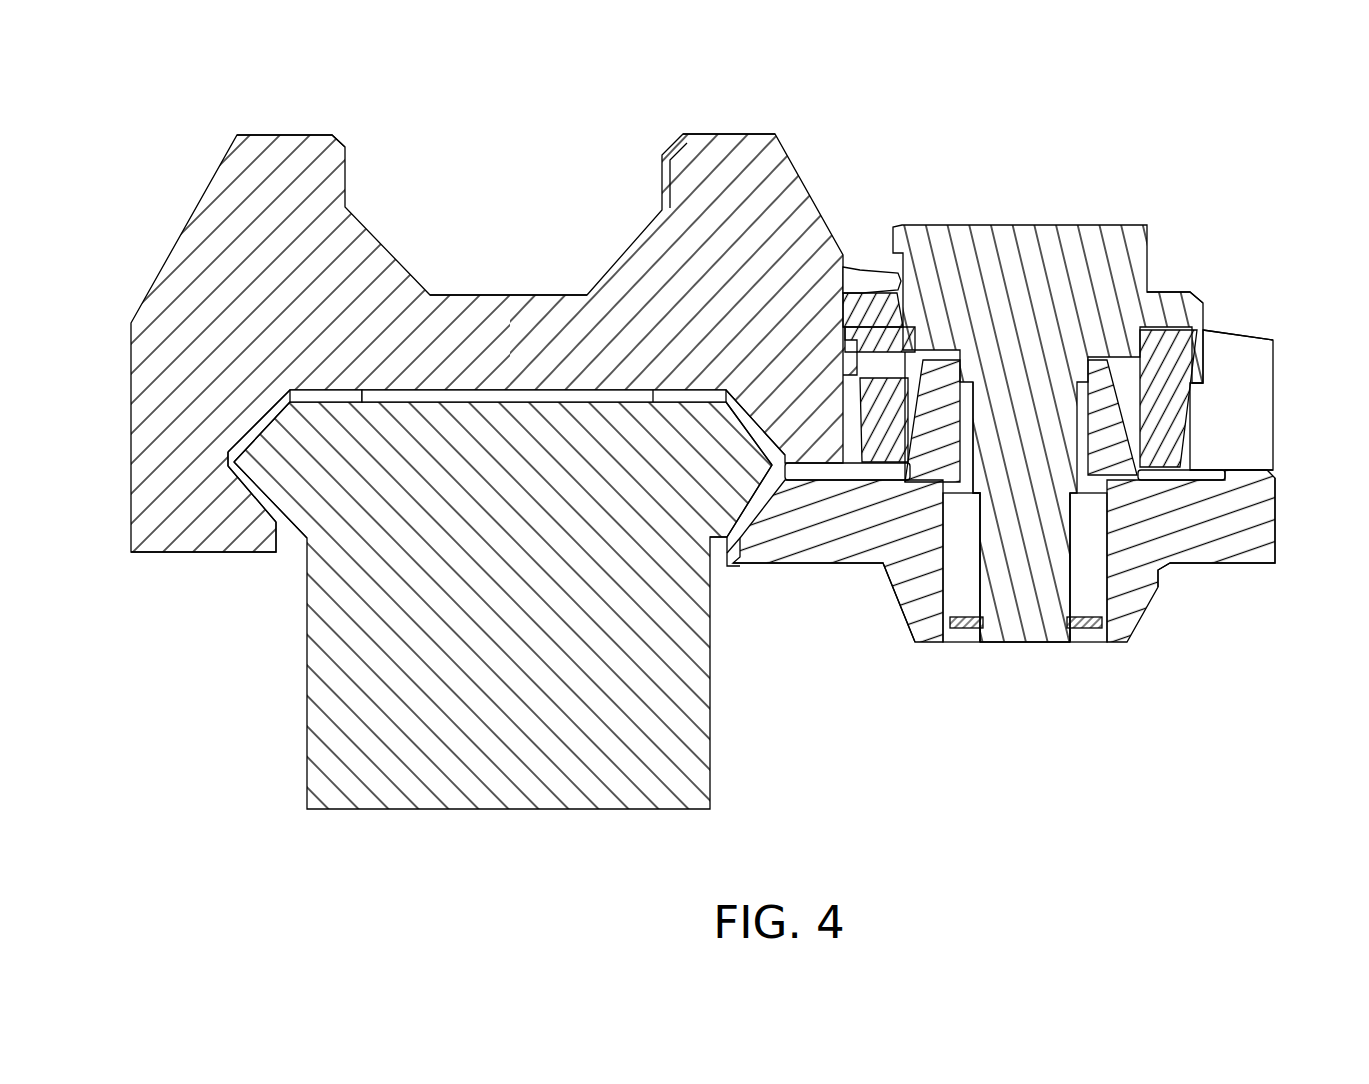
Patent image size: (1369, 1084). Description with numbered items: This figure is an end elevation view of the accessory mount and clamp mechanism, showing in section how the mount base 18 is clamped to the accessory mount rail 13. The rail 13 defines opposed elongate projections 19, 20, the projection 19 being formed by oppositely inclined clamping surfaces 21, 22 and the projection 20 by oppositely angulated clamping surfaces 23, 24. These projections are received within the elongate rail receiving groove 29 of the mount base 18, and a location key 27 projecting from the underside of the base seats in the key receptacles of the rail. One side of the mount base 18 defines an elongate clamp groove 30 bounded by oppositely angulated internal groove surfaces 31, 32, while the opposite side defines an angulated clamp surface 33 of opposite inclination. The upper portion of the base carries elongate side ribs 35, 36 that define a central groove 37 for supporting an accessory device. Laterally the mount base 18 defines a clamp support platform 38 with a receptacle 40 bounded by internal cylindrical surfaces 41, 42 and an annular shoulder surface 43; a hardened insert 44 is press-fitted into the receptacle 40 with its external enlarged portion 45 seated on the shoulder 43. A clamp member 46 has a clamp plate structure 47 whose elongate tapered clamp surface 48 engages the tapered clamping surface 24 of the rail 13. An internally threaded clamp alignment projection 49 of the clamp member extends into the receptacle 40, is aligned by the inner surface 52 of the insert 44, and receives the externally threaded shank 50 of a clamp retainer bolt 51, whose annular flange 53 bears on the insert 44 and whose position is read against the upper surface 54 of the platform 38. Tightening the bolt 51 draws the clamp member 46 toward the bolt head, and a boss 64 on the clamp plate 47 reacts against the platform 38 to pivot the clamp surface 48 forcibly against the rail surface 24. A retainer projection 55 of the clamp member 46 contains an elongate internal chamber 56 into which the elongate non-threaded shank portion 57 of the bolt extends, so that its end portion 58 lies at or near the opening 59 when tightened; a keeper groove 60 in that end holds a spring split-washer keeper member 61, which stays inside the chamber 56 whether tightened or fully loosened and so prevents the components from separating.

The accessory mount rail 13 is at (408, 809).
The mount base 18 is at (182, 205).
The elongate projection 19 is at (232, 466).
The elongate projection 20 is at (750, 473).
The clamping surface 21 is at (262, 458).
The clamping surface 22 is at (224, 514).
The clamping surface 23 is at (745, 400).
The clamping surface 24 is at (735, 540).
The location key 27 is at (420, 395).
The rail receiving groove 29 is at (314, 395).
The clamp groove 30 is at (228, 472).
The internal groove surface 31 is at (276, 416).
The internal groove surface 32 is at (222, 532).
The clamp surface 33 is at (748, 428).
The side rib 35 is at (280, 165).
The side rib 36 is at (735, 165).
The central groove 37 is at (510, 292).
The clamp support platform 38 is at (1250, 415).
The receptacle 40 is at (1124, 370).
The internal cylindrical surface 41 is at (1175, 312).
The internal cylindrical surface 42 is at (1168, 394).
The annular shoulder surface 43 is at (1195, 345).
The hardened insert 44 is at (877, 417).
The external enlarged portion 45 is at (862, 347).
The clamp member 46 is at (1275, 565).
The clamp plate structure 47 is at (1250, 532).
The tapered clamp surface 48 is at (740, 508).
The clamp alignment projection 49 is at (957, 372).
The externally threaded shank 50 is at (905, 475).
The clamp retainer bolt 51 is at (1128, 373).
The inner surface of the insert 52 is at (945, 420).
The annular flange 53 is at (862, 307).
The upper surface 54 is at (1252, 332).
The retainer projection 55 is at (1150, 592).
The internal chamber 56 is at (1110, 626).
The non-threaded shank portion 57 is at (1027, 575).
The end portion 58 is at (1005, 643).
The opening 59 is at (957, 643).
The keeper groove 60 is at (1050, 628).
The keeper member 61 is at (948, 624).
The boss 64 is at (1252, 467).